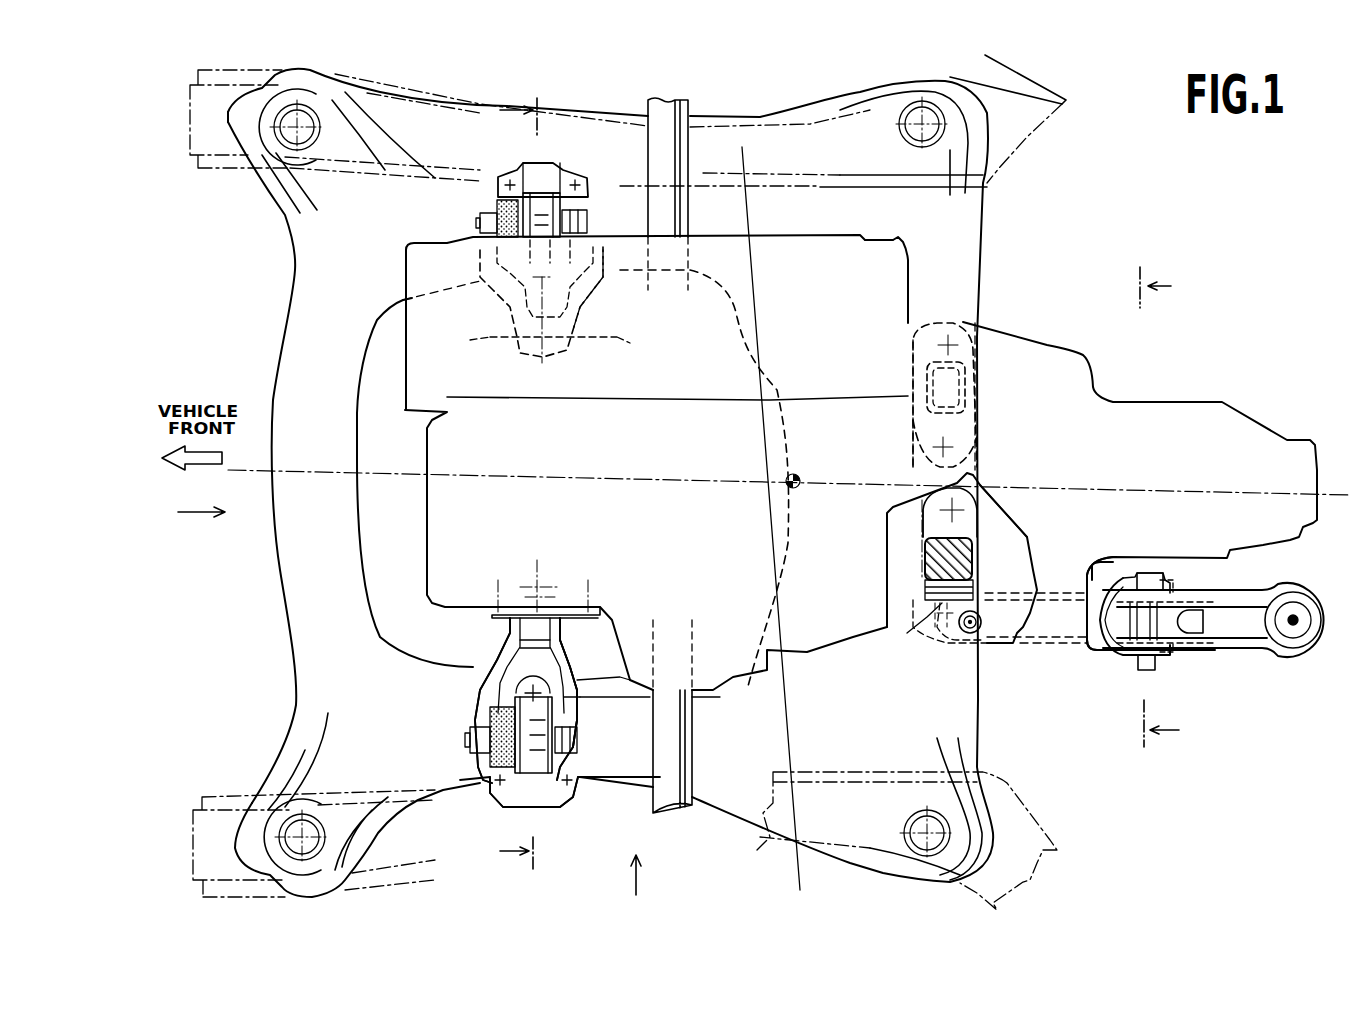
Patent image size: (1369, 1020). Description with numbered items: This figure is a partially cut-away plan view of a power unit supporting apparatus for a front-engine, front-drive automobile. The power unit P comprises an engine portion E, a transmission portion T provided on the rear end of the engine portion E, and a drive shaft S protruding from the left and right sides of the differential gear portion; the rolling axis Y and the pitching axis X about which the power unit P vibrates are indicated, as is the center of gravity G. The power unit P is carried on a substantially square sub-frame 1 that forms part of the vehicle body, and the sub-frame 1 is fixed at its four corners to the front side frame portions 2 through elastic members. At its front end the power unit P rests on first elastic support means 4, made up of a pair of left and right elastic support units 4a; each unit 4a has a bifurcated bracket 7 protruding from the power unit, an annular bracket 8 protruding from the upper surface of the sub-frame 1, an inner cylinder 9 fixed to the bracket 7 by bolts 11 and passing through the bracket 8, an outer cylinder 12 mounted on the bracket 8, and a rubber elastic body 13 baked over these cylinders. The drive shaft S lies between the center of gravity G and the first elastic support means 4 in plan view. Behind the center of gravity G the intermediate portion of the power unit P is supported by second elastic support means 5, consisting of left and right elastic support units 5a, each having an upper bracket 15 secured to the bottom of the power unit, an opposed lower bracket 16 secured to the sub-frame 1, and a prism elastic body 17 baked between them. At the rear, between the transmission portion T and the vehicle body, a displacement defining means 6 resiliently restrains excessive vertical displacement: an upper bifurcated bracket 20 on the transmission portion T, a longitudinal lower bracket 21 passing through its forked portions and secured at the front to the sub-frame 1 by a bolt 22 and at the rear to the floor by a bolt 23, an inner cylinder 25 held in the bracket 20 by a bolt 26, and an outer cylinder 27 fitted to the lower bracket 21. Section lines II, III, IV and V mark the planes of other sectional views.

The sub-frame 1 is at (303, 293).
The front side frame portions 2 is at (730, 117).
The first elastic support means 4 is at (455, 695).
The elastic support unit 4a is at (470, 236).
The second elastic support means 5 is at (1003, 540).
The elastic support unit 5a is at (988, 425).
The displacement defining means 6 is at (1124, 666).
The bifurcated bracket 7 is at (503, 277).
The annular bracket 8 is at (575, 165).
The inner cylinder 9 is at (583, 271).
The bolts 11 is at (588, 228).
The outer cylinder 12 is at (543, 195).
The elastic body 13 is at (500, 210).
The upper bracket 15 is at (913, 424).
The lower bracket 16 is at (978, 358).
The prism elastic body 17 is at (958, 390).
The upper bifurcated bracket 20 is at (1120, 572).
The lower bracket 21 is at (1241, 637).
The bolt 22 is at (970, 634).
The bolt 23 is at (1293, 632).
The inner cylinder 25 is at (1178, 586).
The bolt 26 is at (1147, 572).
The outer cylinder 27 is at (1203, 620).
The engine portion E is at (583, 501).
The power unit P is at (897, 233).
The transmission portion T is at (789, 486).
The drive shaft S is at (680, 735).
The center of gravity G is at (795, 488).
The pitching axis X is at (783, 617).
The rolling axis Y is at (673, 470).
The section line II is at (635, 890).
The section line III is at (185, 513).
The section line IV is at (1175, 507).
The section line V is at (509, 484).